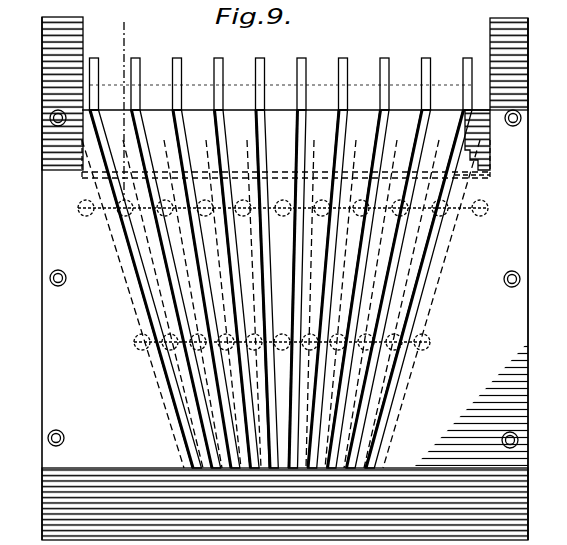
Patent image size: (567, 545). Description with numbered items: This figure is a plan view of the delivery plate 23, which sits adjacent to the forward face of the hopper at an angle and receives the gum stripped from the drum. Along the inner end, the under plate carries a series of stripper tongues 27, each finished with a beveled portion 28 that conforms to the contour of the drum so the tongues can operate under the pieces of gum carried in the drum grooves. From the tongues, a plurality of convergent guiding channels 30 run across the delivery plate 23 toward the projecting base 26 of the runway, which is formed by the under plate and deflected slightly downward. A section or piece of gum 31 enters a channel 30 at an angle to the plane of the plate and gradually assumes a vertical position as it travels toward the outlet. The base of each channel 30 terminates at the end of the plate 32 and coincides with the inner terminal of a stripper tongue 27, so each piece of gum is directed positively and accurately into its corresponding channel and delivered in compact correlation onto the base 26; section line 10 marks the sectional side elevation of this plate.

The pitch spacing 10 is at (137, 18).
The delivery plate 23 is at (52, 338).
The base of runway 26 is at (55, 478).
The stripper tongues 27 is at (93, 60).
The beveled portions 28 is at (300, 78).
The convergent guiding channels 30 is at (145, 274).
The section or piece of gum 31 is at (60, 176).
The end of the plate 32 is at (475, 170).